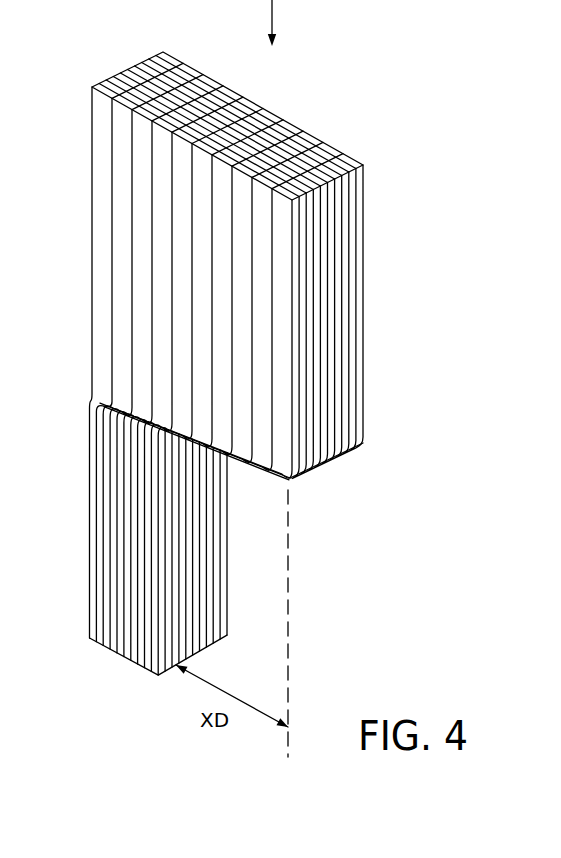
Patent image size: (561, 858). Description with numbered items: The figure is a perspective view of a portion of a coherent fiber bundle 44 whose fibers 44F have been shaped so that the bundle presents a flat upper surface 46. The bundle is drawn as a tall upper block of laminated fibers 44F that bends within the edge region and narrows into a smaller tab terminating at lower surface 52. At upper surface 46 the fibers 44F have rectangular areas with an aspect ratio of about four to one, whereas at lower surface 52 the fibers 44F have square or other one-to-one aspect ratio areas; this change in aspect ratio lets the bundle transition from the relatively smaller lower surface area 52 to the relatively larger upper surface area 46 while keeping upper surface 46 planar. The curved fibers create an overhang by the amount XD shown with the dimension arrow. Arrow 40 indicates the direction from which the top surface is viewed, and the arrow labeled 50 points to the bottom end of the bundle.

The viewing direction 40 is at (272, 5).
The coherent fiber bundle 44 is at (432, 286).
The fibers 44F is at (353, 160).
The upper surface 46 is at (270, 110).
The tab end 50 is at (123, 697).
The lower surface 52 is at (113, 652).